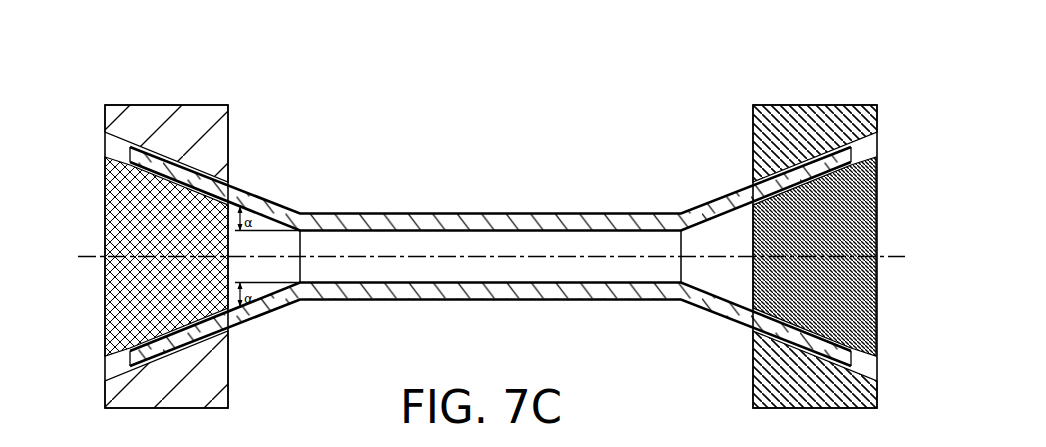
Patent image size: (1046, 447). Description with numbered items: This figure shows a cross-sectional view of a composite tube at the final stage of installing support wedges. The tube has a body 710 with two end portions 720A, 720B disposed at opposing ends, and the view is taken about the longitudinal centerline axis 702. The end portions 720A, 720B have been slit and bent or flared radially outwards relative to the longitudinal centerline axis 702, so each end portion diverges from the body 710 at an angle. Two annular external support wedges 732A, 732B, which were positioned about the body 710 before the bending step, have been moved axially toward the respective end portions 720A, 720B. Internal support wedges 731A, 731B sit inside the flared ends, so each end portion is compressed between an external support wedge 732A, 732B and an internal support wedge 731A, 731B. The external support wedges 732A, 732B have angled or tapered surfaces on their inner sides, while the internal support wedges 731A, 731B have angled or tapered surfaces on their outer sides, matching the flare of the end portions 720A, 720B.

The longitudinal centerline axis 702 is at (490, 256).
The body 710 is at (545, 222).
The end portion 720A is at (293, 97).
The end portion 720B is at (845, 90).
The internal support wedge 731A is at (110, 190).
The internal support wedge 731B is at (853, 177).
The annular external support wedge 732A is at (212, 142).
The annular external support wedge 732B is at (763, 142).